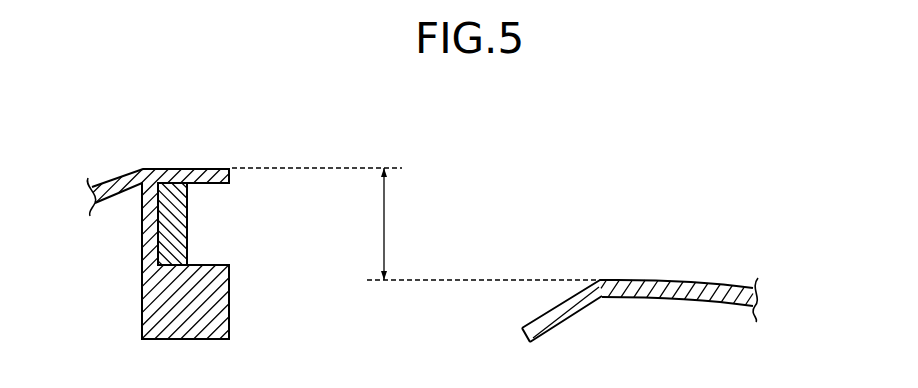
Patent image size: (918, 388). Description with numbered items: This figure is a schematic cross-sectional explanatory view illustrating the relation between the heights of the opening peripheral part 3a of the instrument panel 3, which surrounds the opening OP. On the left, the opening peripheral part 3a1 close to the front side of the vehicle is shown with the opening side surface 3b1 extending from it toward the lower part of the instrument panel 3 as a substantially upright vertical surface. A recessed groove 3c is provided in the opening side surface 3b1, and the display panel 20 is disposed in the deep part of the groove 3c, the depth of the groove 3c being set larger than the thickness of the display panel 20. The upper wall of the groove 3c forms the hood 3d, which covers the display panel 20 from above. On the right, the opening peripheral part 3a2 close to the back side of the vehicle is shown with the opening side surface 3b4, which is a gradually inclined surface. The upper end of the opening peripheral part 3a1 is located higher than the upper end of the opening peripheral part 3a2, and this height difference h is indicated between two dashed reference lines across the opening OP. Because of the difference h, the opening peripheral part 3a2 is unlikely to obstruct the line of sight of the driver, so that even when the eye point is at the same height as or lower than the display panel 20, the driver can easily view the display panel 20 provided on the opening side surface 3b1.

The instrument panel 3 is at (422, 206).
The opening peripheral part 3a is at (422, 205).
The opening peripheral part close to the front side of the vehicle 3a1 is at (232, 168).
The opening peripheral part close to the back side of the vehicle 3a2 is at (600, 280).
The hood 3d is at (248, 188).
The groove 3c is at (213, 262).
The opening side surface 3b1 is at (230, 305).
The opening side surface 3b4 is at (548, 308).
The display panel 20 is at (188, 223).
The difference h is at (416, 224).
The opening OP is at (467, 187).